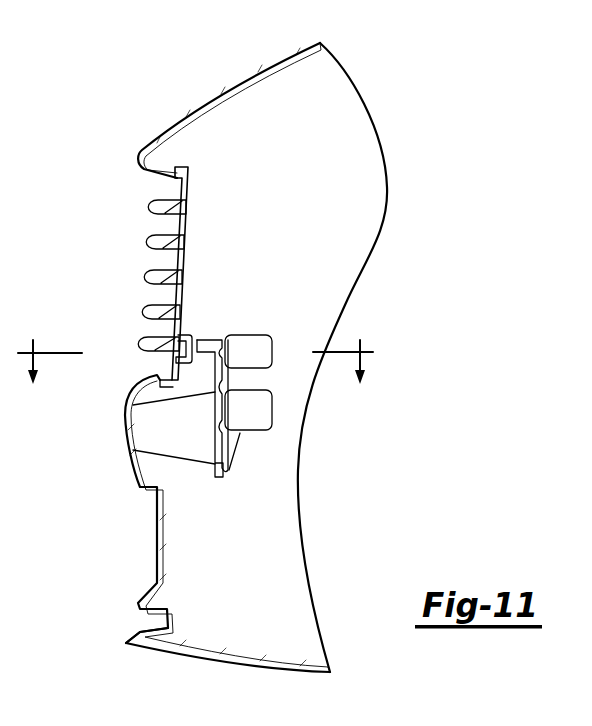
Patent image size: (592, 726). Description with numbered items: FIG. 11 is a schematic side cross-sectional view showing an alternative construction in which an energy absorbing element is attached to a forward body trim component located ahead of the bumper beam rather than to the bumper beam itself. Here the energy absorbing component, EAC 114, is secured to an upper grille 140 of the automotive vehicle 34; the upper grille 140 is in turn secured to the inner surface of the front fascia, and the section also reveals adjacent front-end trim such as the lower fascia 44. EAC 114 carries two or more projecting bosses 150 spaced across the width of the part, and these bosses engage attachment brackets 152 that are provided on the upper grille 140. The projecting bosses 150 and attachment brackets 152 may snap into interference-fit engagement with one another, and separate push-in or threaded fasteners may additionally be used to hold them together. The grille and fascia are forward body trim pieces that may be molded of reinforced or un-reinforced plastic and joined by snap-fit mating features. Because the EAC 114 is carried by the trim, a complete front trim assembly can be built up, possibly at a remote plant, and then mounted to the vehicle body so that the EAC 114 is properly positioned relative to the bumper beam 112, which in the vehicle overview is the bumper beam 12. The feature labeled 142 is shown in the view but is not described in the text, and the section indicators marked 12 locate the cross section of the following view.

The automotive vehicle 34 is at (218, 71).
The hook 142 is at (140, 160).
The upper grille 140 is at (150, 275).
The attachment brackets 152 is at (187, 335).
The projecting bosses 150 is at (212, 338).
The bumper beam 112 is at (272, 352).
The EAC (energy absorbing component) 114 is at (192, 464).
The lower fascia 44 is at (127, 644).
The bumper beam 12 is at (195, 383).